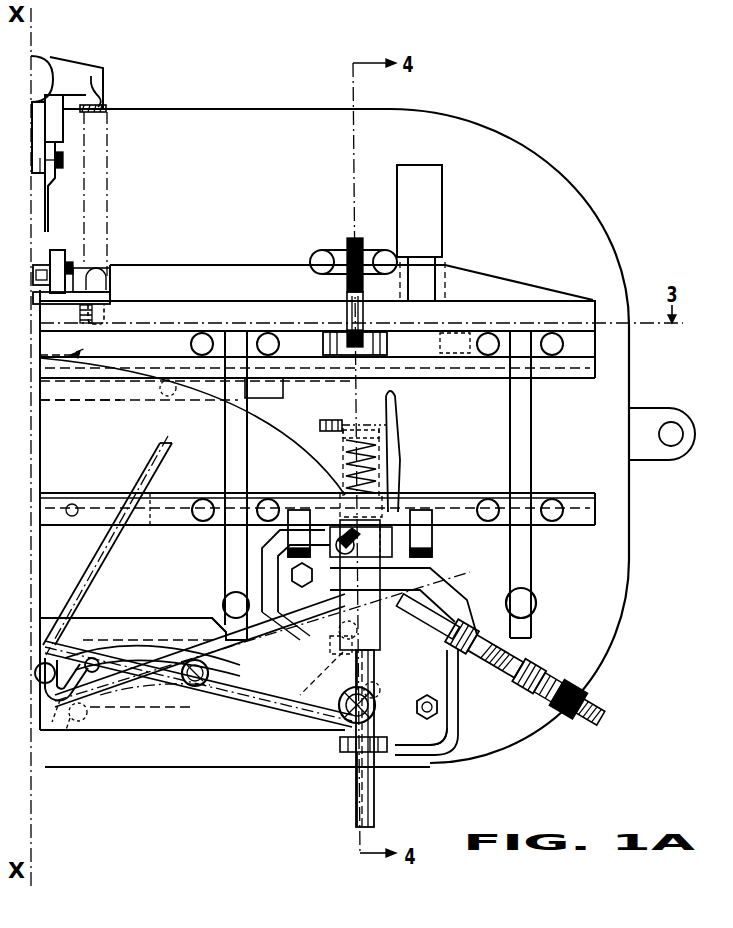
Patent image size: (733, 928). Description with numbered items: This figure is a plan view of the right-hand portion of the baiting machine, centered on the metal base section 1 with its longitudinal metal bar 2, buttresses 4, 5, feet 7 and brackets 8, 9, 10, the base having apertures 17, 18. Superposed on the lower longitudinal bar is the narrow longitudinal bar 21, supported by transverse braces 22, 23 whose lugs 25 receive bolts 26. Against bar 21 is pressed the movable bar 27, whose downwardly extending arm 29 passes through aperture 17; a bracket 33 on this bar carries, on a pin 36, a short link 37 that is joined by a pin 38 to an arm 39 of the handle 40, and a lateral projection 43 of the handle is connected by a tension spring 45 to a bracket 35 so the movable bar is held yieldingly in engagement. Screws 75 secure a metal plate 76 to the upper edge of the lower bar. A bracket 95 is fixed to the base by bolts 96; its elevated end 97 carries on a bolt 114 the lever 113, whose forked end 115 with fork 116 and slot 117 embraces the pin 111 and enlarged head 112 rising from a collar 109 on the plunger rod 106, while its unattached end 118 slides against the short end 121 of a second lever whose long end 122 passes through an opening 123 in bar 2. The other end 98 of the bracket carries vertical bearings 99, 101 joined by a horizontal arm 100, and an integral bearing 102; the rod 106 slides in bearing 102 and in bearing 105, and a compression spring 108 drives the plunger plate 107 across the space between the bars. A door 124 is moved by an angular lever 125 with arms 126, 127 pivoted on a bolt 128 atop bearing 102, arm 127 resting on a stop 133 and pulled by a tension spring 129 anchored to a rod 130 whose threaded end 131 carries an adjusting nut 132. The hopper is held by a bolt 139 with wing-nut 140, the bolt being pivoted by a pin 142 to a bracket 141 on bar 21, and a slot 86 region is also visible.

The base section 1 is at (140, 768).
The longitudinal metal bar 2 is at (88, 515).
The buttress 4 is at (528, 628).
The buttress 5 is at (230, 628).
The feet 7 is at (670, 410).
The bracket 8 is at (431, 530).
The bracket 9 is at (290, 530).
The bracket 10 is at (95, 92).
The aperture 17 is at (440, 215).
The aperture 18 is at (138, 715).
The narrow longitudinal bar 21 is at (158, 342).
The transverse brace 22 is at (532, 560).
The transverse brace 23 is at (232, 558).
The lug 25 is at (218, 342).
The bolt 26 is at (208, 502).
The movable bar 27 is at (150, 283).
The arm 29 is at (425, 275).
The bracket 33 is at (57, 258).
The bracket 35 is at (103, 316).
The pin 36 is at (73, 265).
The short link 37 is at (46, 226).
The pin 38 is at (64, 160).
The arm 39 is at (38, 138).
The handle 40 is at (42, 62).
The lateral projection 43 is at (80, 70).
The tension spring 45 is at (100, 124).
The screw 75 is at (170, 397).
The metal plate 76 is at (106, 396).
The slot 86 is at (80, 345).
The bracket 95 is at (225, 731).
The bolt 96 is at (291, 576).
The end of bracket 97 is at (100, 718).
The end of bracket 98 is at (452, 740).
The vertical bearing 99 is at (470, 632).
The horizontal arm 100 is at (510, 655).
The vertical bearing 101 is at (532, 672).
The bearing 102 is at (395, 570).
The bearing 105 is at (350, 754).
The rod 106 is at (375, 808).
The plunger plate 107 is at (350, 430).
The compression spring 108 is at (345, 470).
The collar 109 is at (358, 630).
The pin 111 is at (364, 690).
The enlarged head 112 is at (375, 699).
The lever 113 is at (320, 705).
The bolt 114 is at (194, 687).
The end of lever 115 is at (290, 692).
The fork 116 is at (380, 750).
The slot 117 is at (376, 646).
The end of lever 118 is at (105, 640).
The end of lever 121 is at (64, 718).
The end of lever 122 is at (76, 592).
The opening 123 is at (148, 514).
The door 124 is at (397, 430).
The angular lever 125 is at (355, 546).
The arm 126 is at (399, 538).
The arm 127 is at (296, 585).
The bolt 128 is at (361, 537).
The tension spring 129 is at (418, 620).
The rod 130 is at (495, 658).
The threaded end 131 is at (588, 706).
The nut 132 is at (576, 690).
The stop 133 is at (334, 634).
The bolt 139 is at (347, 287).
The wing-nut 140 is at (380, 250).
The bracket 141 is at (451, 339).
The pin 142 is at (388, 345).